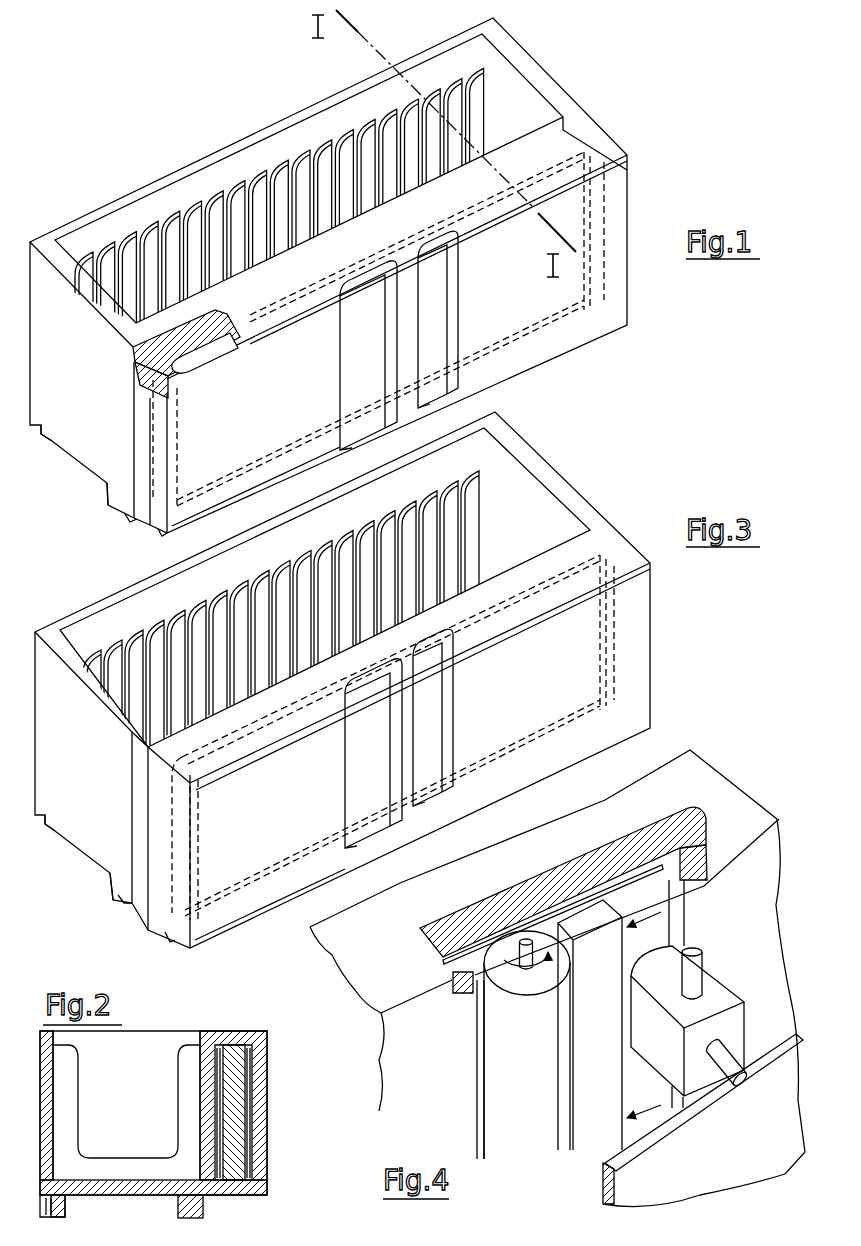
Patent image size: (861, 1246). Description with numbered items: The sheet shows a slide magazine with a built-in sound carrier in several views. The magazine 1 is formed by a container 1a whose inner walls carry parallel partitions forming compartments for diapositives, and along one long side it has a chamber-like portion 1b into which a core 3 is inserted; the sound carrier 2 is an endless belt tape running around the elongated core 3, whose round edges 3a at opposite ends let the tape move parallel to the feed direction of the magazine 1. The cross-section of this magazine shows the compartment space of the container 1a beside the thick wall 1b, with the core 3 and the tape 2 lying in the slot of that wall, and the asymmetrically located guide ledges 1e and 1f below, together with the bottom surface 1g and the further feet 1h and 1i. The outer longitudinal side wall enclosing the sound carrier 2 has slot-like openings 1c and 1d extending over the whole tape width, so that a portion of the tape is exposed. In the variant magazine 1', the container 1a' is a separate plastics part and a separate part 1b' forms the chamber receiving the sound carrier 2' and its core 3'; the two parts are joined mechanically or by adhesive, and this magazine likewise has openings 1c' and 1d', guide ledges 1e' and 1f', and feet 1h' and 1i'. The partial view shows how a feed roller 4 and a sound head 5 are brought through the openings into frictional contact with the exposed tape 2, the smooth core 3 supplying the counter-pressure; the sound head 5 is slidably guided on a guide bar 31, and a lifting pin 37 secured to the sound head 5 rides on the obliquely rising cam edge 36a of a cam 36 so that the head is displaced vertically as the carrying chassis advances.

In FIG. 1, the magazine 1 is at (328, 275).
In FIG. 3, the magazine 1' is at (358, 680).
In FIG. 1, the container 1a is at (309, 205).
In FIG. 2, the container 1a is at (126, 1105).
In FIG. 3, the container 1a' is at (325, 593).
In FIG. 1, the chamber-like portion 1b is at (456, 205).
In FIG. 2, the chamber-like portion 1b is at (255, 1103).
In FIG. 4, the chamber-like portion 1b is at (557, 948).
In FIG. 3, the separate part forming a chamber 1b' is at (450, 676).
In FIG. 1, the slot-like opening 1c is at (369, 444).
In FIG. 4, the slot-like opening 1c is at (433, 974).
In FIG. 3, the slot-like opening 1c' is at (381, 865).
In FIG. 1, the slot-like opening 1d is at (443, 417).
In FIG. 4, the slot-like opening 1d is at (688, 849).
In FIG. 3, the slot-like opening 1d' is at (447, 828).
In FIG. 1, the guide ledge 1e is at (97, 521).
In FIG. 2, the guide ledge 1e is at (170, 1207).
In FIG. 3, the guide ledge 1e' is at (102, 910).
In FIG. 1, the guide ledge 1f is at (39, 455).
In FIG. 2, the guide ledge 1f is at (75, 1209).
In FIG. 3, the guide ledge 1f' is at (47, 845).
In FIG. 2, the bottom surface 1g is at (235, 1197).
In FIG. 1, the foot 1h is at (155, 547).
In FIG. 3, the foot (variant) 1h' is at (170, 959).
In FIG. 1, the foot 1i is at (123, 543).
In FIG. 3, the foot (variant) 1i' is at (130, 929).
In FIG. 1, the sound carrier 2 is at (330, 340).
In FIG. 2, the sound carrier 2 is at (257, 1113).
In FIG. 4, the sound carrier 2 is at (580, 1008).
In FIG. 3, the sound carrier 2' is at (399, 738).
In FIG. 1, the core 3 is at (213, 364).
In FIG. 2, the core 3 is at (260, 1112).
In FIG. 4, the core 3 is at (563, 885).
In FIG. 3, the core 3' is at (393, 737).
In FIG. 1, the round edges 3a is at (137, 367).
In FIG. 4, the feed roller 4 is at (497, 1092).
In FIG. 4, the sound head 5 is at (717, 987).
In FIG. 4, the guide bar 31 is at (695, 953).
In FIG. 4, the cam 36 is at (742, 1154).
In FIG. 4, the cam edge 36a is at (620, 1163).
In FIG. 4, the lifting pin 37 is at (747, 1077).